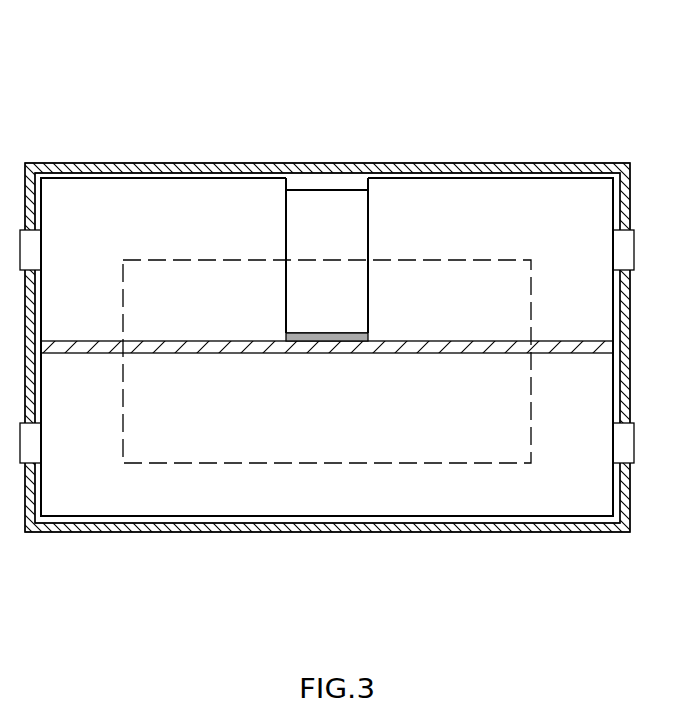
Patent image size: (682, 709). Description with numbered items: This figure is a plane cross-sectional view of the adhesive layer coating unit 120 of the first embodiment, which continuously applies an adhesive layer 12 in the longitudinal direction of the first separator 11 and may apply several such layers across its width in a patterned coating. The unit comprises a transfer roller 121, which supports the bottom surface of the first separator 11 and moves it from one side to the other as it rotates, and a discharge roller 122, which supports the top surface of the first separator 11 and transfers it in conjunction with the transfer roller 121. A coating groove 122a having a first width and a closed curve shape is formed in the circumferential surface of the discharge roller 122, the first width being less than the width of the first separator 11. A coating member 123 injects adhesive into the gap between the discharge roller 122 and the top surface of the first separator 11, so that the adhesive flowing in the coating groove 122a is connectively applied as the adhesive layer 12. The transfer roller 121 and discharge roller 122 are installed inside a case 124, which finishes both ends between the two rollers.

The first separator 11 is at (83, 347).
The adhesive layer 12 is at (326, 339).
The adhesive layer coating unit 120 is at (163, 93).
The transfer roller 121 is at (409, 400).
The discharge roller 122 is at (245, 200).
The coating groove 122a is at (293, 343).
The coating member 123 is at (489, 262).
The case 124 is at (163, 163).